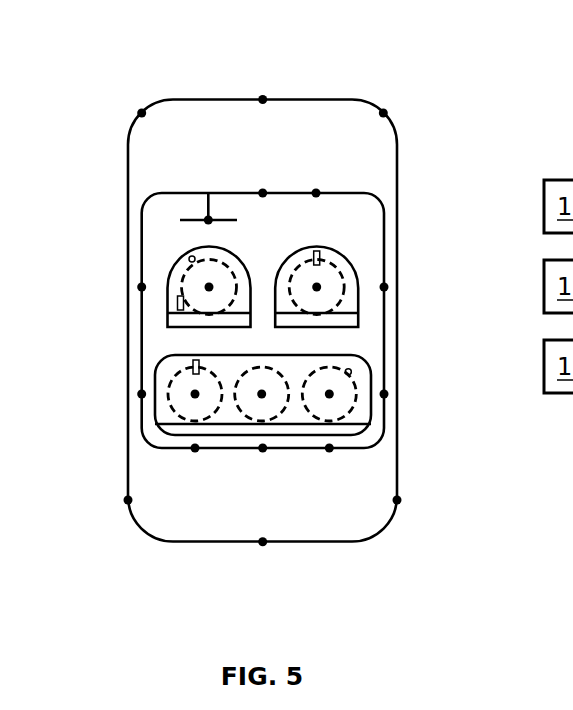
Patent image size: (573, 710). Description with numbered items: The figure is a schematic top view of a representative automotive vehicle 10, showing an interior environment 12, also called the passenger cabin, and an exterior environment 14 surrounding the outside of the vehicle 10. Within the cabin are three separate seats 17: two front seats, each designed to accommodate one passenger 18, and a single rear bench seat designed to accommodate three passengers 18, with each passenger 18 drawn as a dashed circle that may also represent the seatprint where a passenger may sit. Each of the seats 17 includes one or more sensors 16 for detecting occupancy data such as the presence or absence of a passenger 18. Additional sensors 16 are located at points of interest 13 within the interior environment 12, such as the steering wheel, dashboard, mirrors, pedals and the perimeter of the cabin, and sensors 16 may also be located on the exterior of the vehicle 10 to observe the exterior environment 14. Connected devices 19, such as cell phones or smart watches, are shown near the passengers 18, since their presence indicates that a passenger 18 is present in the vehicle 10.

The automotive vehicle 10 is at (128, 180).
The interior environment 12 is at (384, 235).
The points of interest 13 is at (263, 193).
The exterior environment 14 is at (276, 38).
The sensors 16 is at (263, 100).
The seats 17 is at (191, 257).
The passengers 18 is at (310, 370).
The connected devices 19 is at (189, 258).